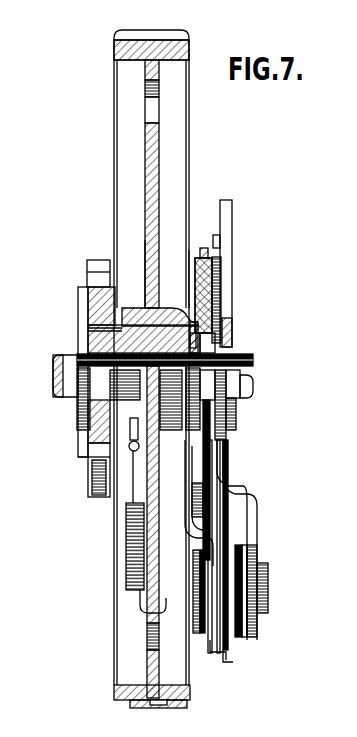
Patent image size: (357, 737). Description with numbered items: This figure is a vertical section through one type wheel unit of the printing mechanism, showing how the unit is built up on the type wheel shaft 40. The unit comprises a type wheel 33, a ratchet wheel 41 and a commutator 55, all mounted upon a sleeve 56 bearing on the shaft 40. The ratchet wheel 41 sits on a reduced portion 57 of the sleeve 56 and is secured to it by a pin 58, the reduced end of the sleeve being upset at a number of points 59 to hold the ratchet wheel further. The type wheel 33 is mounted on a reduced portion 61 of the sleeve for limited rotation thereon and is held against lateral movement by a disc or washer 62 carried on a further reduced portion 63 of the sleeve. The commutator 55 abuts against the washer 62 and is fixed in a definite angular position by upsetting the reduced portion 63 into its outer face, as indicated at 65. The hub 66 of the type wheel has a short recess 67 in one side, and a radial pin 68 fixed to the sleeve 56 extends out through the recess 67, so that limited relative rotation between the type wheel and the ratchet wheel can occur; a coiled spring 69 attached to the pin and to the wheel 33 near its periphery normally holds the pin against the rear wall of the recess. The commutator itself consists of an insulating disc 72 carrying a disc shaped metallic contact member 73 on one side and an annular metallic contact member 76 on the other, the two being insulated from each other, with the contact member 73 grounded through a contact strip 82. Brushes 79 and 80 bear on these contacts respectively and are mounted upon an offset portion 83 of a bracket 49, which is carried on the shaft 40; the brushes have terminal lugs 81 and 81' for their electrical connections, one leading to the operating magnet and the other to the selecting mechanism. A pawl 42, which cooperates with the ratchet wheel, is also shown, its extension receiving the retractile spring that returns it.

The type wheel 33 is at (178, 127).
The type wheel shaft 40 is at (250, 386).
The ratchet wheel 41 is at (92, 303).
The pawl 42 is at (95, 477).
The bracket 49 is at (230, 402).
The commutator 55 is at (200, 238).
The sleeve 56 is at (125, 325).
The reduced portion 57 is at (95, 355).
The pin 58 is at (102, 328).
The upset points 59 is at (92, 345).
The reduced portion 61 is at (163, 308).
The disc or washer 62 is at (190, 308).
The further reduced portion 63 is at (193, 345).
The upset portion 65 is at (215, 352).
The hub 66 is at (142, 308).
The recess 67 is at (138, 397).
The radial pin 68 is at (128, 437).
The coiled spring 69 is at (130, 547).
The insulating disc 72 is at (205, 280).
The disc shaped metallic contact member 73 is at (197, 270).
The annular metallic contact member 76 is at (213, 290).
The brush 79 is at (248, 488).
The brush 80 is at (203, 510).
The terminal lug 81 is at (210, 660).
The terminal lug 81' is at (250, 663).
The contact strip 82 is at (224, 327).
The offset portion 83 is at (252, 627).